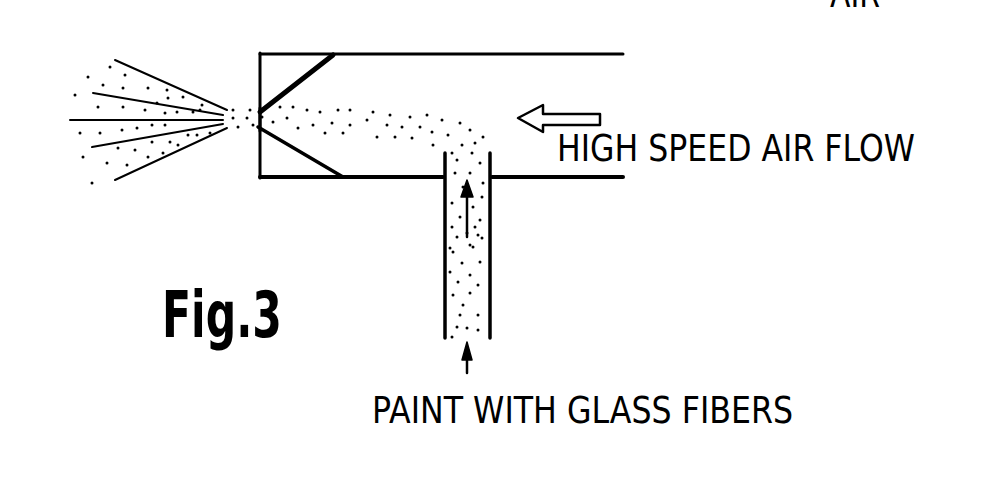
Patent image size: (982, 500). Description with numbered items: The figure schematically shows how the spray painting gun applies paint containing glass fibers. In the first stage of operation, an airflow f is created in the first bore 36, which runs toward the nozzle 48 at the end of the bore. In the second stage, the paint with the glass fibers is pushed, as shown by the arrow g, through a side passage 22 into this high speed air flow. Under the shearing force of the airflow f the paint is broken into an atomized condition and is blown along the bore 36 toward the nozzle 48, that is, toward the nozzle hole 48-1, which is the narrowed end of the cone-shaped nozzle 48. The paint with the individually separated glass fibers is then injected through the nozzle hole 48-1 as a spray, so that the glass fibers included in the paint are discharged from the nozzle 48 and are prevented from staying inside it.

The first bore 36 is at (553, 53).
The nozzle 48 is at (295, 155).
The nozzle hole 48-1 is at (257, 126).
The paint supply pipe 22 is at (492, 297).
The airflow f is at (572, 110).
The arrow indicating paint flow g is at (470, 222).